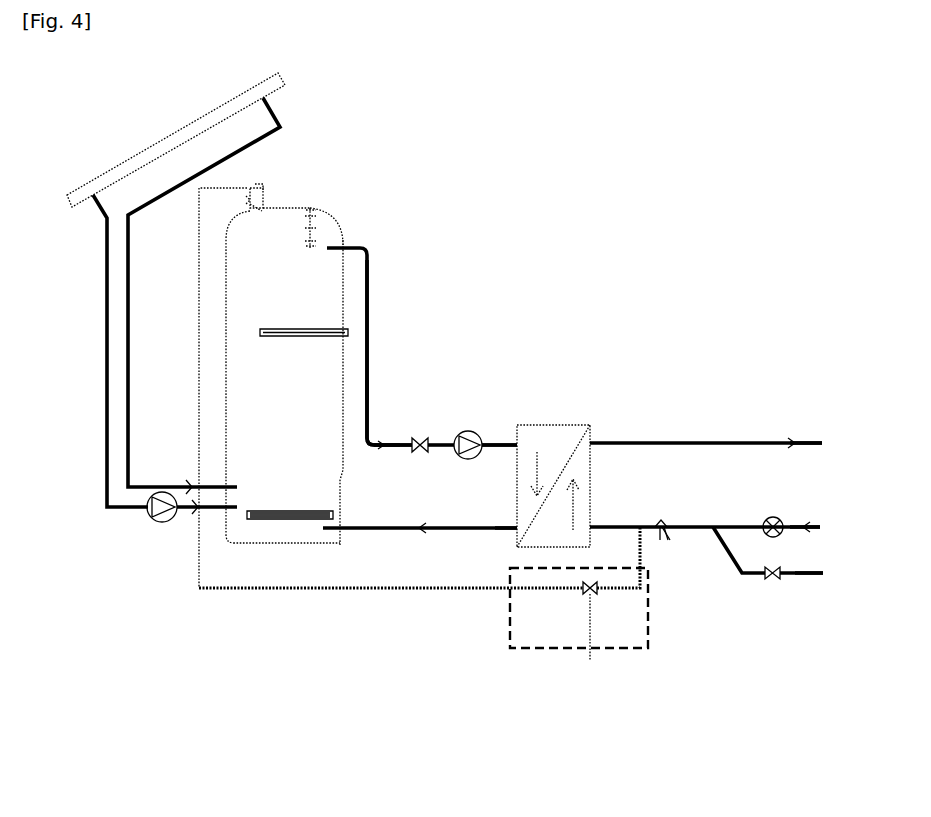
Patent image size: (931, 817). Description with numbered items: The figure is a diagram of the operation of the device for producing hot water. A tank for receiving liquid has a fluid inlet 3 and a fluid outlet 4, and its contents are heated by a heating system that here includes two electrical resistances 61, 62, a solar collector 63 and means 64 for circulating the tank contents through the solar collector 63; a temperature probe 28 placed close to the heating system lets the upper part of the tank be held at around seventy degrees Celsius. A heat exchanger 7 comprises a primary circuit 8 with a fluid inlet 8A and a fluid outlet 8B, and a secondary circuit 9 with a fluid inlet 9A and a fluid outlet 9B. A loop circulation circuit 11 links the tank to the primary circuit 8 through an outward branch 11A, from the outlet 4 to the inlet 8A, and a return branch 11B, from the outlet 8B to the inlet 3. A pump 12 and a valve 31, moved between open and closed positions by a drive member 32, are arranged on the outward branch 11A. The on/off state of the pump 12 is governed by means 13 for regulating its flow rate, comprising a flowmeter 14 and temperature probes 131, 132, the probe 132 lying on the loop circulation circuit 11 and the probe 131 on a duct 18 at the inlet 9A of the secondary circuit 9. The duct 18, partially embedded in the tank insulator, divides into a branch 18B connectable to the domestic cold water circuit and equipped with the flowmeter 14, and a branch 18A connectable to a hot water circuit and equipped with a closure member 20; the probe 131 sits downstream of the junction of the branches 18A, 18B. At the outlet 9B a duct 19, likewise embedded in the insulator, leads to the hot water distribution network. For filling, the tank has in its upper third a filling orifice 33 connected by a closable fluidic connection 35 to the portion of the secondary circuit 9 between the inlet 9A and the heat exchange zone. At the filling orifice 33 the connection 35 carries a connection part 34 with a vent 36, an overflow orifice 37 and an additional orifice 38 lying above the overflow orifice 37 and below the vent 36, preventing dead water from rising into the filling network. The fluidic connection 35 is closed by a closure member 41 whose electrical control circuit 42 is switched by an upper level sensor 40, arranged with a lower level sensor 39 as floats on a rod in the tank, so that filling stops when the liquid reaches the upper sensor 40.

The solar collector 63 is at (185, 125).
The closable fluidic connection 35 is at (199, 333).
The vent 36 is at (252, 190).
The connection part 34 is at (262, 190).
The filling orifice 33 is at (264, 206).
The additional orifice 38 is at (250, 200).
The overflow orifice 37 is at (253, 207).
The fluid inlet 3 is at (312, 208).
The upper level sensor 40 is at (313, 216).
The lower level sensor 39 is at (313, 228).
The temperature probe 132 is at (313, 242).
The fluid outlet 4 is at (340, 250).
The loop circulation circuit 11 is at (370, 352).
The outward branch 11A is at (370, 395).
The electrical resistance 61 is at (333, 328).
The temperature probe 28 is at (350, 333).
The electrical resistance 62 is at (277, 521).
The means for circulating 64 is at (162, 522).
The valve 31 is at (410, 440).
The drive member 32 is at (423, 438).
The pump 12 is at (478, 433).
The fluid inlet 8A is at (515, 443).
The heat exchanger 7 is at (553, 425).
The primary circuit 8 is at (528, 487).
The secondary circuit 9 is at (580, 487).
The fluid outlet 9B is at (595, 440).
The duct 19 is at (808, 443).
The return branch 11B is at (428, 532).
The fluid outlet 8B is at (527, 540).
The fluid inlet 9A is at (592, 533).
The means for regulating the flow rate 13 is at (662, 527).
The temperature probe 131 is at (663, 530).
The duct 18 is at (697, 530).
The flowmeter 14 is at (783, 518).
The branch 18B is at (820, 527).
The closure member 20 is at (775, 580).
The branch 18A is at (812, 576).
The closure member 41 is at (593, 594).
The electrical control circuit 42 is at (590, 660).